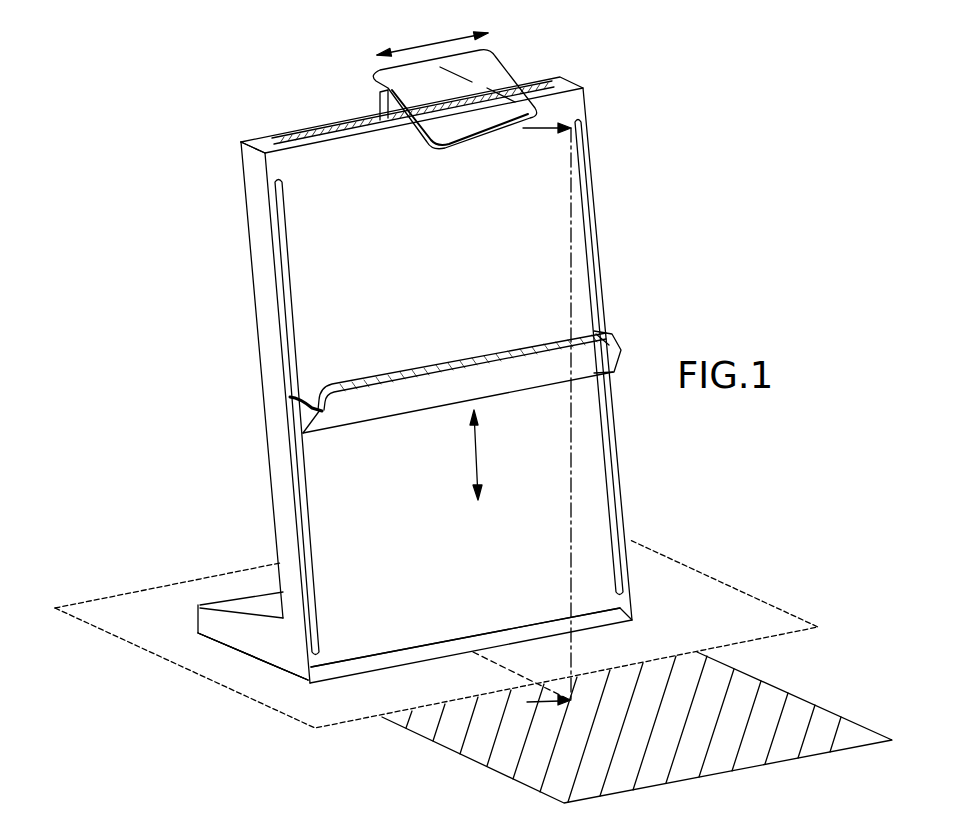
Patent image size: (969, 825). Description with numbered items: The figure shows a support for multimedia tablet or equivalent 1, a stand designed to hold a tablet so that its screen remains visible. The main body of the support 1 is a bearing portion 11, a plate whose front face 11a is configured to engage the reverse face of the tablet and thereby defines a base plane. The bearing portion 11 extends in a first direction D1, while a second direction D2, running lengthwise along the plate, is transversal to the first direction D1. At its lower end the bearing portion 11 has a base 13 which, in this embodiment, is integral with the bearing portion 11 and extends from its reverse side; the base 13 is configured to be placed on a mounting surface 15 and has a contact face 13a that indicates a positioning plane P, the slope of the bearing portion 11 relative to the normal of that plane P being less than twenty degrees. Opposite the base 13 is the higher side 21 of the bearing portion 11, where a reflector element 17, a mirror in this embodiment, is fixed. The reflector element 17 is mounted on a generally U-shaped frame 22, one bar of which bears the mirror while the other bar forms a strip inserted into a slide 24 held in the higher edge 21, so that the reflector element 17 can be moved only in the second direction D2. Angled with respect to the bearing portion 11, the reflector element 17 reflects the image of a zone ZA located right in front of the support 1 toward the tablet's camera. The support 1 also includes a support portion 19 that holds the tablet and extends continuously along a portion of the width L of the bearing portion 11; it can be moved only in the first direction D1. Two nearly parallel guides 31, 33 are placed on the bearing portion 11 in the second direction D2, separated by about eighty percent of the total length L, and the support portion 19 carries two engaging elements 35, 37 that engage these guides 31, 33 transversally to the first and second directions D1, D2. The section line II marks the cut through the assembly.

The support for multimedia tablet 1 is at (668, 185).
The bearing portion 11 is at (323, 272).
The front face 11a is at (310, 250).
The base 13 is at (230, 627).
The contact face 13a is at (263, 660).
The positioning plane P is at (253, 656).
The mounting surface 15 is at (112, 632).
The reflector element 17 is at (500, 70).
The support portion 19 is at (347, 418).
The higher side 21 is at (257, 143).
The frame 22 is at (377, 95).
The slide 24 is at (303, 135).
The guide 31 is at (270, 202).
The guide 33 is at (583, 147).
The engaging element 35 is at (290, 397).
The engaging element 37 is at (612, 337).
The zone ZA is at (792, 717).
The first direction D1 is at (492, 455).
The second direction D2 is at (432, 37).
The width L is at (465, 637).
The section line II- II is at (522, 428).